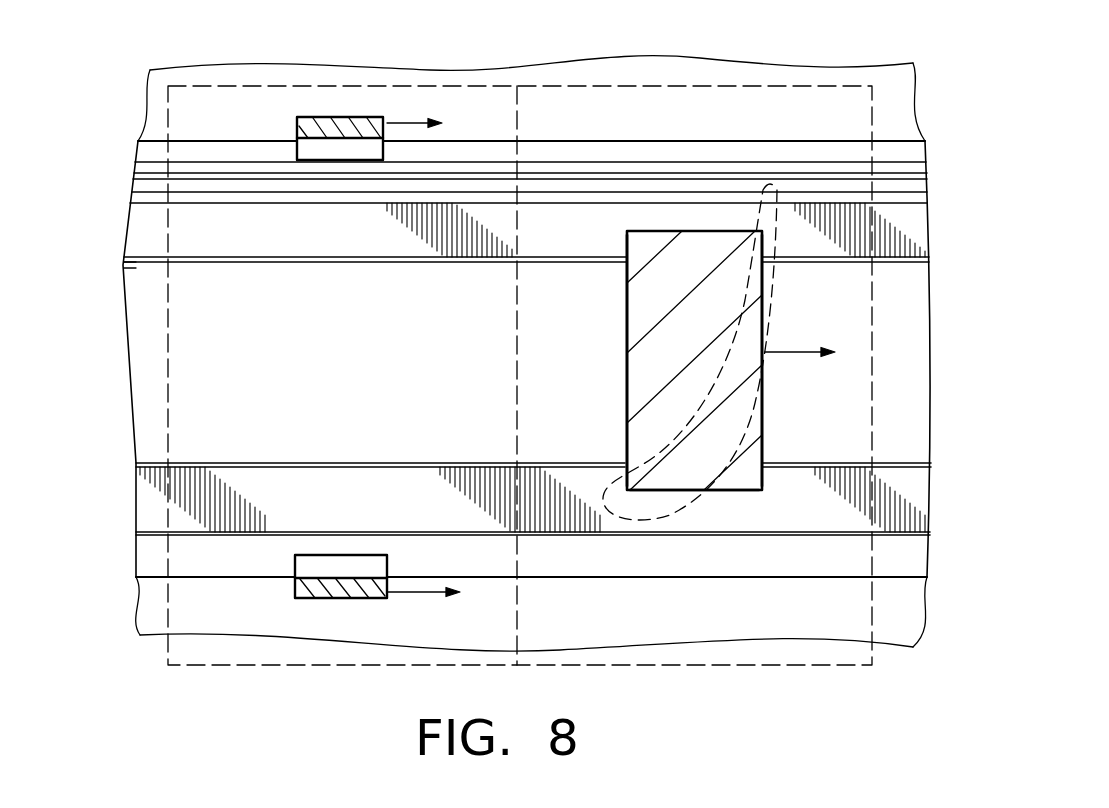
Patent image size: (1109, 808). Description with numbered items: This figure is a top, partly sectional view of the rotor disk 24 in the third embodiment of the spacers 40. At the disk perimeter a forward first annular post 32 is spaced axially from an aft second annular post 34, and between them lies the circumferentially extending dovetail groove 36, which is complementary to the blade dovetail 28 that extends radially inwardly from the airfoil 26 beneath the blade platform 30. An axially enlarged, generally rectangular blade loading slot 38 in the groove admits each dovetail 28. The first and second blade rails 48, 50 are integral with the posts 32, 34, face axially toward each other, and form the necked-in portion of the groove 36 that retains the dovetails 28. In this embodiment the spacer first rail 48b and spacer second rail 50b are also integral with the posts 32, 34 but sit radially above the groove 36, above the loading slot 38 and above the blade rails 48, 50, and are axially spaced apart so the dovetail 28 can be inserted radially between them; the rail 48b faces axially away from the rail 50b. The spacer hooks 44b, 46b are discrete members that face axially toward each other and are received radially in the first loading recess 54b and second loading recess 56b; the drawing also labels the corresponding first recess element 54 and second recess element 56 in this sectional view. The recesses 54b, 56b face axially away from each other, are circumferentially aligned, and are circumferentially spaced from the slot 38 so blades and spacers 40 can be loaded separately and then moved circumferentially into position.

The rotor disk 24 is at (134, 131).
The airfoil 26 is at (685, 512).
The dovetail 28 is at (763, 450).
The blade platform 30 is at (773, 86).
The first annular post 32 is at (130, 490).
The second annular post 34 is at (127, 222).
The dovetail groove 36 is at (152, 373).
The blade loading slot 38 is at (620, 278).
The spacer 40 is at (232, 86).
The first hook 44b is at (333, 600).
The second hook 46b is at (340, 117).
The first blade rail 48 is at (247, 463).
The first spacer rail 48b is at (560, 577).
The second blade rail 50 is at (340, 260).
The second spacer rail 50b is at (583, 141).
The block bottom face 54 is at (745, 492).
The first loading recess 54b is at (353, 555).
The hatched block 56 is at (635, 231).
The second loading recess 56b is at (314, 160).